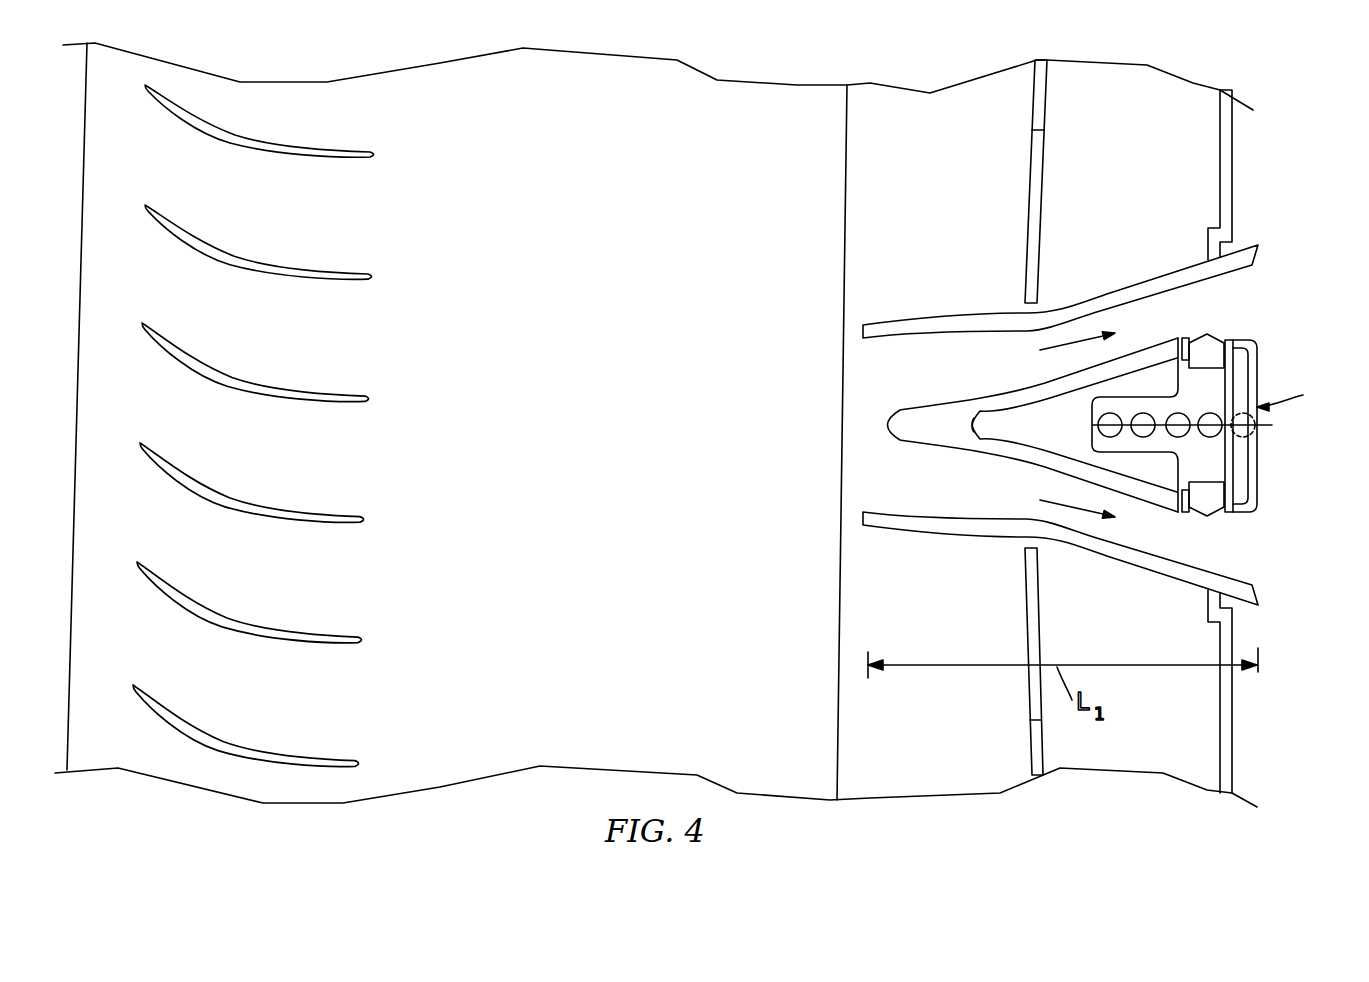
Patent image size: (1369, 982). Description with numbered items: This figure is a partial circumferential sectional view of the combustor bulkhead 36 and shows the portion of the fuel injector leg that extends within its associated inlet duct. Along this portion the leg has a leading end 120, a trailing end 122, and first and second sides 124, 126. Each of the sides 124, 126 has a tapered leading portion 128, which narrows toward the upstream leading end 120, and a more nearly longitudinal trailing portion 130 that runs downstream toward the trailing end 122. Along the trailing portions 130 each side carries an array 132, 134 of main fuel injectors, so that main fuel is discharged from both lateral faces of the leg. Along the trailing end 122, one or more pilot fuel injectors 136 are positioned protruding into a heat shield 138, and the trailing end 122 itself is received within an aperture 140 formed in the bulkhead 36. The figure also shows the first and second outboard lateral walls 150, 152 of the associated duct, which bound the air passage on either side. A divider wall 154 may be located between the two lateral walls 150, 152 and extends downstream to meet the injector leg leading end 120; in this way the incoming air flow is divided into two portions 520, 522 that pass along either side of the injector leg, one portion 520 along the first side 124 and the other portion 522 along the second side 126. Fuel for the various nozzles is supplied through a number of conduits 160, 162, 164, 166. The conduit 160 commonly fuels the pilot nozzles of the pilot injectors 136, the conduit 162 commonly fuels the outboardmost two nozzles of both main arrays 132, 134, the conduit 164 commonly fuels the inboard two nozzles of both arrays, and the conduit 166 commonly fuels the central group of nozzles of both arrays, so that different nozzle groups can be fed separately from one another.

The bulkhead 36 is at (1228, 172).
The leading end 120 is at (1090, 430).
The trailing end 122 is at (1302, 397).
The first side 124 is at (1186, 518).
The second side 126 is at (1192, 323).
The tapered leading portion 128 is at (1137, 462).
The trailing portion 130 is at (1230, 516).
The array of main fuel injectors 132 is at (1220, 521).
The array of main fuel injectors 134 is at (1210, 350).
The pilot fuel injectors 136 is at (1250, 438).
The heat shield 138 is at (1254, 470).
The aperture 140 is at (1270, 584).
The first outboard lateral wall 150 is at (915, 525).
The second outboard lateral wall 152 is at (913, 325).
The divider wall 154 is at (913, 433).
The conduit 160 is at (1214, 412).
The conduit 162 is at (1185, 434).
The conduit 164 is at (1146, 413).
The conduit 166 is at (1065, 405).
The air flow portion 520 is at (1078, 530).
The air flow portion 522 is at (1078, 337).